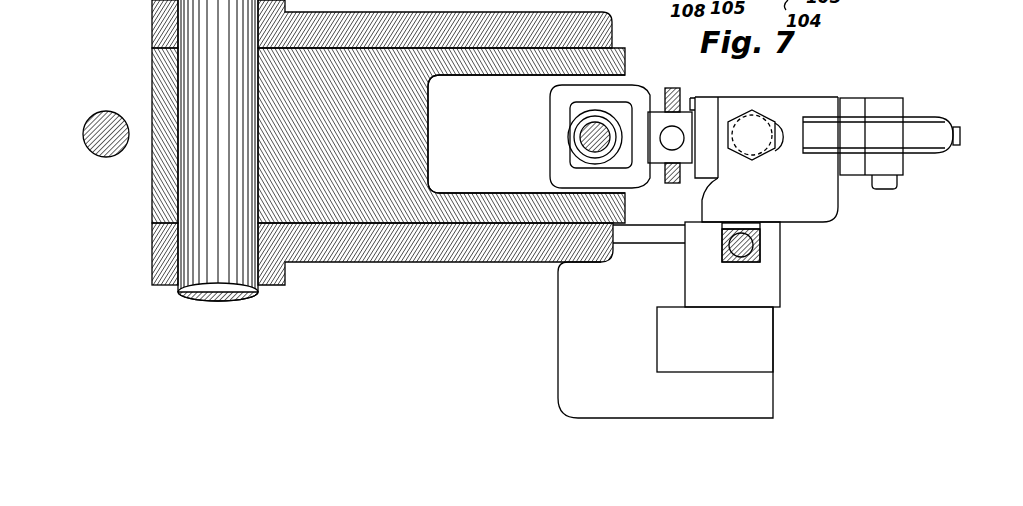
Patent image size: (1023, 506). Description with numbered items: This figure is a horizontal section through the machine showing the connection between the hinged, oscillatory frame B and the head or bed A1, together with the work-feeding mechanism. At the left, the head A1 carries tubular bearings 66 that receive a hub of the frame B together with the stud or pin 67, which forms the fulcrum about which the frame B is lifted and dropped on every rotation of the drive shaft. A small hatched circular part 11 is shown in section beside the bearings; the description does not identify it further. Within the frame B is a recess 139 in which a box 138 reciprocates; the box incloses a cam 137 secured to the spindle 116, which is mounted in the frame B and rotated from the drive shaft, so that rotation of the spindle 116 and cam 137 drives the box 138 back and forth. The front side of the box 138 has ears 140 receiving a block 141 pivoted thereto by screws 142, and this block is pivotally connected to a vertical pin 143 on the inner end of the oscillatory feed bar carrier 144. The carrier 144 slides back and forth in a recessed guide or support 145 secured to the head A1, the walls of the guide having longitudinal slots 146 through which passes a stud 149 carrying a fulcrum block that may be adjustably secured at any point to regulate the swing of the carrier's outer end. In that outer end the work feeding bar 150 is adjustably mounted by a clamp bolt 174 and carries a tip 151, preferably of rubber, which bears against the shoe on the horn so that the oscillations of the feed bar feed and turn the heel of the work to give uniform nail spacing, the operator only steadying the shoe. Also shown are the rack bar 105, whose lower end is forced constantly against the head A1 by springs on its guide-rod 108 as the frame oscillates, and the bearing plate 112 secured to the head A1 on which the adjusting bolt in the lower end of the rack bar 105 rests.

The pin 11 is at (110, 156).
The tubular bearings 66 is at (222, 295).
The stud or pin 67 is at (168, 27).
The rack bar 105 is at (758, 241).
The guide-rod 108 is at (762, 255).
The bearing plate 112 is at (669, 320).
The spindle 116 is at (588, 133).
The cam 137 is at (620, 160).
The box 138 is at (553, 163).
The recess 139 is at (459, 134).
The ears 140 is at (713, 202).
The block 141 is at (683, 120).
The screws 142 is at (668, 88).
The vertical pin 143 is at (677, 142).
The feed bar carrier 144 is at (708, 100).
The recessed guide or support 145 is at (836, 210).
The longitudinal slot 146 is at (785, 150).
The stud 149 is at (757, 125).
The work feeding bar 150 is at (918, 128).
The tip 151 is at (957, 152).
The clamp bolt 174 is at (890, 187).
The head or bed A1 is at (370, 250).
The oscillatory frame B is at (405, 133).